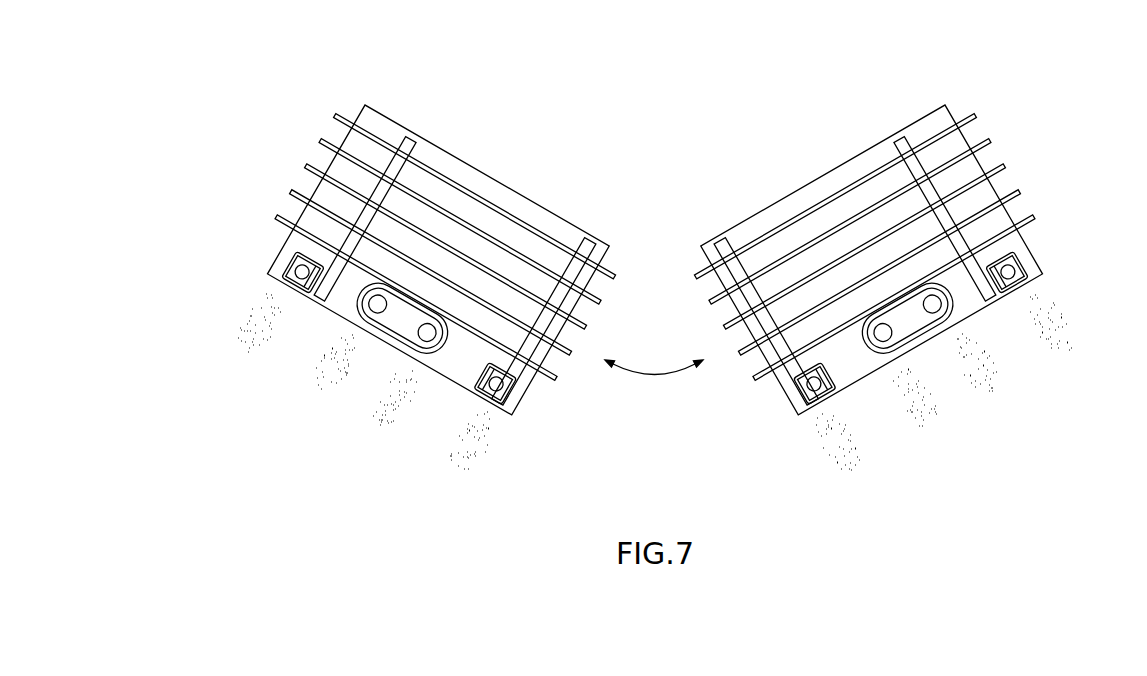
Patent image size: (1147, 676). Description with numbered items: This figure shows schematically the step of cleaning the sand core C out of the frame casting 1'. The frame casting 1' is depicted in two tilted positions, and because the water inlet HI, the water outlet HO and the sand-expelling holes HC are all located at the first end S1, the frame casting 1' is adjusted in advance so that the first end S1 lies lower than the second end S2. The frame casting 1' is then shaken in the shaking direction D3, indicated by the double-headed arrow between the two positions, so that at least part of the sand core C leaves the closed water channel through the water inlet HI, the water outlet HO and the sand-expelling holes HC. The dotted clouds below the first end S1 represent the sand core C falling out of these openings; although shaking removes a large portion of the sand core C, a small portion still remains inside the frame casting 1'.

The first end S1 is at (249, 239).
The second end S2 is at (327, 94).
The water outlet HO is at (380, 298).
The water inlet HI is at (430, 327).
The sand-expelling holes HC is at (293, 260).
The sand core C is at (247, 312).
The frame casting 1' is at (682, 154).
The shaking direction D3 is at (654, 362).